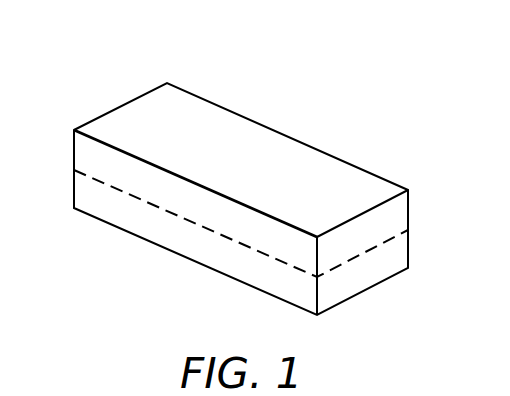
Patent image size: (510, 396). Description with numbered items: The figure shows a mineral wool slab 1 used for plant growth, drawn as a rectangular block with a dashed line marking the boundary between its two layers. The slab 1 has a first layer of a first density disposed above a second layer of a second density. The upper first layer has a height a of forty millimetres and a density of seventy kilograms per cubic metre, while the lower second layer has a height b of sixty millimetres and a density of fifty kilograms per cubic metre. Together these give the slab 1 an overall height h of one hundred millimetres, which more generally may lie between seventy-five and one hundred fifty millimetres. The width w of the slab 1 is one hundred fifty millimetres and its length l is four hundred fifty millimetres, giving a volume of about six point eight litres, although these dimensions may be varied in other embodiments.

The mineral wool slab 1 is at (328, 99).
The height of first layer a is at (74, 130).
The height of second layer b is at (63, 165).
The height of slab h is at (428, 180).
The length of slab l is at (317, 315).
The width of slab w is at (317, 315).